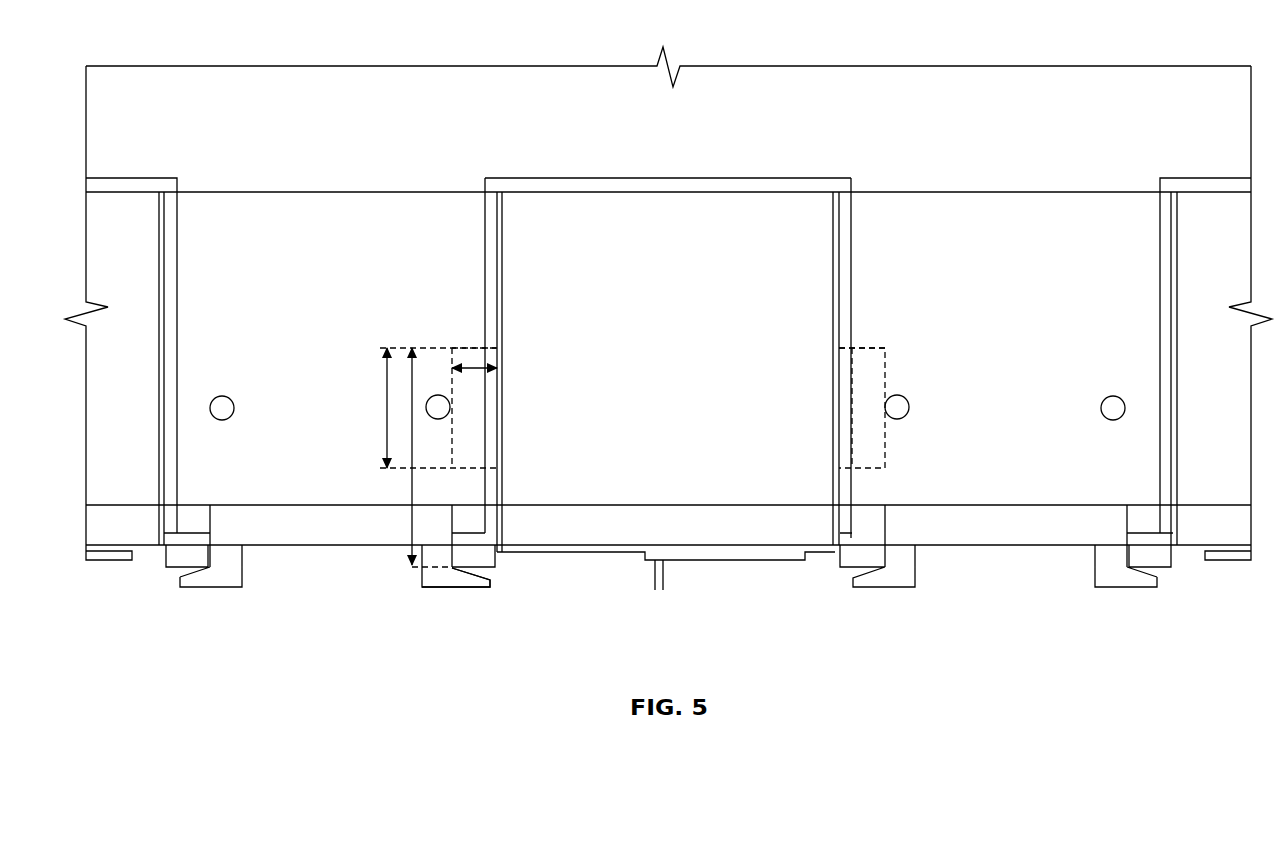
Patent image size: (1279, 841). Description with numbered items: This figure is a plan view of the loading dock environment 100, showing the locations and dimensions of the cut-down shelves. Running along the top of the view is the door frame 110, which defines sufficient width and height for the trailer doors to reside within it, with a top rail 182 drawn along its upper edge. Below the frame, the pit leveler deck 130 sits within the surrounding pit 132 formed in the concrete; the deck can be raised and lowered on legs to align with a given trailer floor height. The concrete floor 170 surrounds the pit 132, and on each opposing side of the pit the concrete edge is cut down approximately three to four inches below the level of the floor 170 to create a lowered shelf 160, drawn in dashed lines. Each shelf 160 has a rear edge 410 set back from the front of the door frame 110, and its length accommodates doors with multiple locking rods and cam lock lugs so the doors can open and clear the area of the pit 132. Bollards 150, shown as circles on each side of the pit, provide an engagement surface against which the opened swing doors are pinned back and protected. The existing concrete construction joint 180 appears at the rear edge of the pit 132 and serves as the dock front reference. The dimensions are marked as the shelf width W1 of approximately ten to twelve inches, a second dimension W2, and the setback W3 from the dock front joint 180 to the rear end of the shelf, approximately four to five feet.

The loading dock environment 100 is at (898, 103).
The top rail 182 is at (903, 192).
The concrete floor 170 is at (472, 235).
The pit leveler deck 130 is at (688, 368).
The pit 132 is at (833, 392).
The lowered shelf 160 is at (470, 430).
The rear edge of shelf 410 is at (485, 345).
The bollard 150 is at (428, 410).
The door frame 110 is at (508, 528).
The concrete construction joint 180 is at (490, 574).
The shelf width W1 is at (475, 370).
The height dimension W2 is at (387, 385).
The dock front to rear-end setback W3 is at (412, 492).